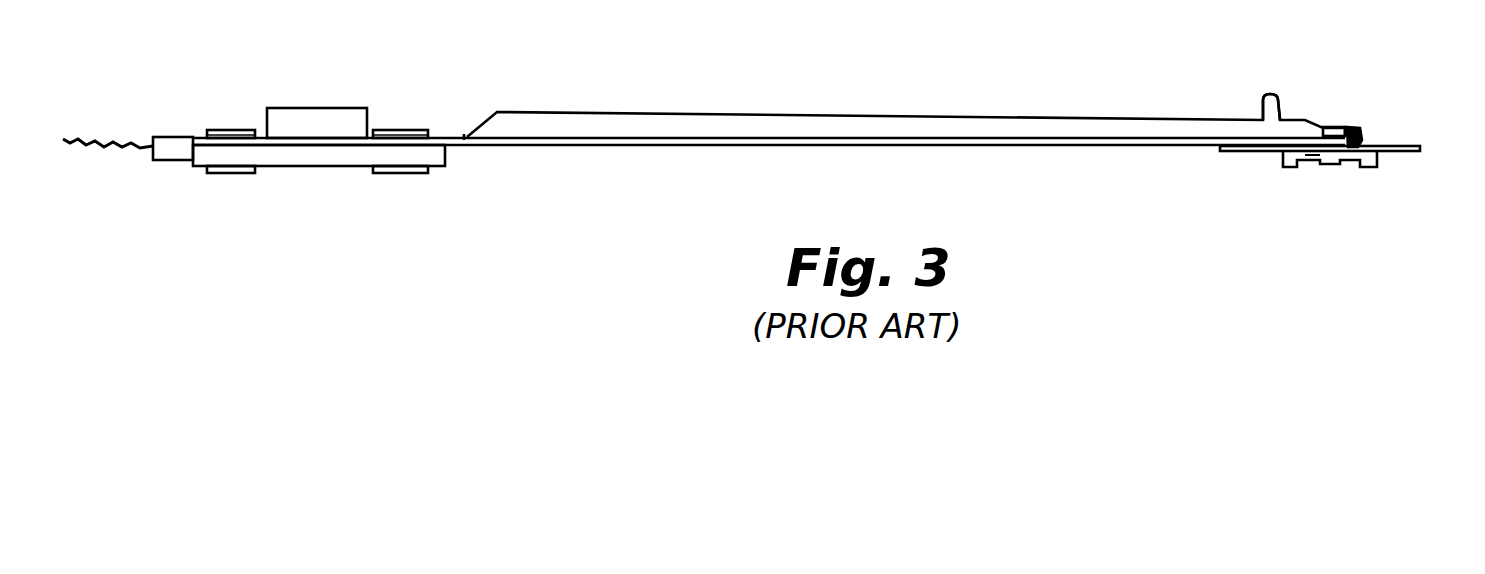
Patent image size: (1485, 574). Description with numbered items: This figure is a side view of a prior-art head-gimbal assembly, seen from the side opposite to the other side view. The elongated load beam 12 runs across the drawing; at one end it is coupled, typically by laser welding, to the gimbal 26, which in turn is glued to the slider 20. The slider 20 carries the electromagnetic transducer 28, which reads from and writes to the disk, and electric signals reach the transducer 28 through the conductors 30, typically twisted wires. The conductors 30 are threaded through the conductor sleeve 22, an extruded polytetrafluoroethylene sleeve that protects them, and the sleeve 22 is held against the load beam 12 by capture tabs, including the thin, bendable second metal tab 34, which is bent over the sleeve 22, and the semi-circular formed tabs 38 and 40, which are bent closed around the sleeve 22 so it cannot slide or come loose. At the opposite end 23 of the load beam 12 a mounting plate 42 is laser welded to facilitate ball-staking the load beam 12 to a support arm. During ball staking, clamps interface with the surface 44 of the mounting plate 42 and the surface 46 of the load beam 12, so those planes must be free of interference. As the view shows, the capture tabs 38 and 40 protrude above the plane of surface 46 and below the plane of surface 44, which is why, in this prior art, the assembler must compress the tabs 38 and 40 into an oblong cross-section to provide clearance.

The load beam 12 is at (612, 147).
The slider 20 is at (1380, 162).
The conductor sleeve 22 is at (178, 137).
The end 23 is at (258, 133).
The gimbal 26 is at (1390, 143).
The electromagnetic transducer 28 is at (1337, 160).
The conductors 30 is at (110, 142).
The second metal tab 34 is at (1257, 103).
The formed tab 38 is at (223, 173).
The formed tab 40 is at (396, 173).
The mounting plate 42 is at (445, 155).
The surface 44 is at (313, 168).
The surface 46 is at (372, 130).